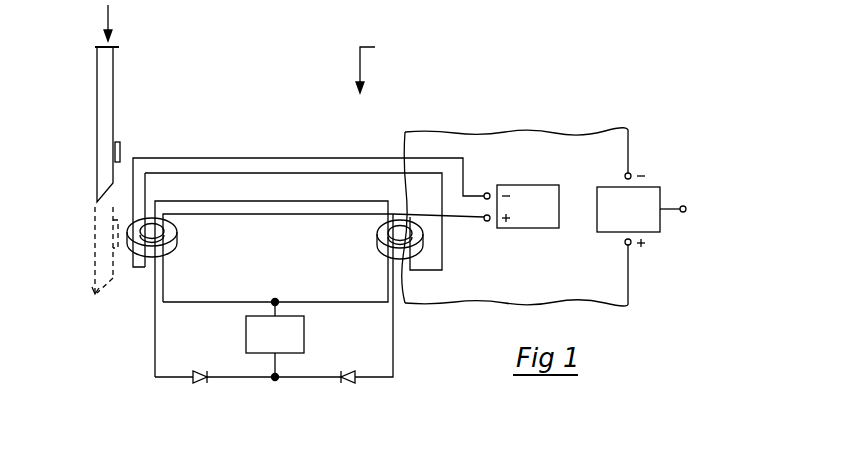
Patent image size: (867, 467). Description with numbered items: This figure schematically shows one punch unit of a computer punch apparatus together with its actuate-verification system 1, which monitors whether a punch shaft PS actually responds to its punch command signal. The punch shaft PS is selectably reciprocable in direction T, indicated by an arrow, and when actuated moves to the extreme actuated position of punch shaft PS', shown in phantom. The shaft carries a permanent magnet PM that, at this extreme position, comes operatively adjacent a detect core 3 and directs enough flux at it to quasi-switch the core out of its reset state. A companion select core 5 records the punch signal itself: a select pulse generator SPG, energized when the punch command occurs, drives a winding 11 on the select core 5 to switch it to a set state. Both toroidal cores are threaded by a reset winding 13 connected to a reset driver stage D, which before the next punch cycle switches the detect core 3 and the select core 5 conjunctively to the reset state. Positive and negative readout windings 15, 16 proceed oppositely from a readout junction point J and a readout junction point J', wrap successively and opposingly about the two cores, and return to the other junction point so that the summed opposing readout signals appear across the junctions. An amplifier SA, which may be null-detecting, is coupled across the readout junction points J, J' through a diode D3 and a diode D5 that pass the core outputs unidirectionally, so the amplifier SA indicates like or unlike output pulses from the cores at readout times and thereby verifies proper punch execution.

The actuate-verification system 1 is at (372, 67).
The detect core 3 is at (168, 249).
The select core 5 is at (378, 243).
The winding 11 is at (530, 132).
The reset winding 13 is at (292, 158).
The readout winding 15 is at (292, 201).
The readout winding 16 is at (292, 214).
The direction T is at (109, 22).
The punch shaft PS is at (121, 124).
The permanent magnet PM is at (118, 142).
The extreme actuated position of punch shaft PS' is at (76, 250).
The readout junction point J is at (271, 381).
The readout junction point J' is at (284, 296).
The amplifier SA is at (275, 334).
The reset driver stage D is at (521, 206).
The select pulse generator SPG is at (641, 210).
The diode D3 is at (198, 384).
The diode D5 is at (352, 384).